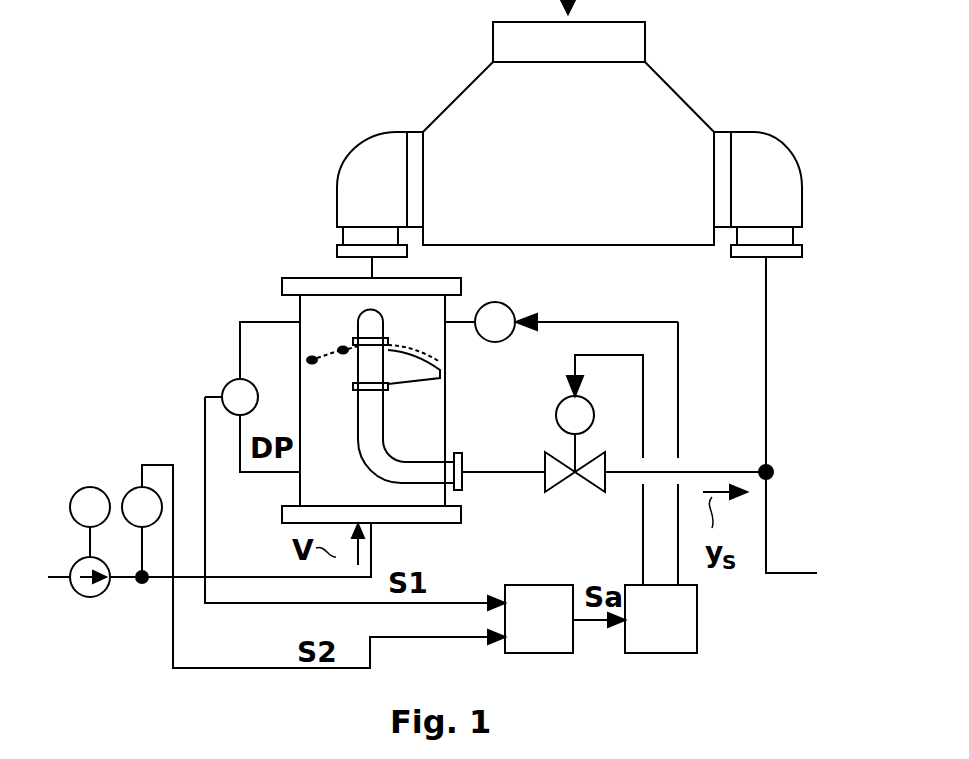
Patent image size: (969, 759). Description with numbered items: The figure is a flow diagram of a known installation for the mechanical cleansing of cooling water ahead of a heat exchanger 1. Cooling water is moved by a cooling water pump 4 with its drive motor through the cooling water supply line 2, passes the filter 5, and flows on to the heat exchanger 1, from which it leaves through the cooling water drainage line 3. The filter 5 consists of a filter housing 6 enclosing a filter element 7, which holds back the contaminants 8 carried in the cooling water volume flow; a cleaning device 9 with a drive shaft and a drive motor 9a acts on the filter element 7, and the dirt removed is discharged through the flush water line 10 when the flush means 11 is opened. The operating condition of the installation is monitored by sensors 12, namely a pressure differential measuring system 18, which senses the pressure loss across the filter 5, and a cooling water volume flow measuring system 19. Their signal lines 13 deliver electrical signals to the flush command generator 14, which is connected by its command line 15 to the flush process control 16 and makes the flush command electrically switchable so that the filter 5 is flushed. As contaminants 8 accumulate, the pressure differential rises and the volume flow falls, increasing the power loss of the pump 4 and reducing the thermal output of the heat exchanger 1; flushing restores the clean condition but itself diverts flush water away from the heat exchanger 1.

The heat exchanger 1 is at (577, 182).
The cooling water supply line 2 is at (275, 577).
The cooling water drainage line 3 is at (767, 541).
The cooling water pump 4 is at (92, 600).
The filter 5 is at (420, 499).
The filter housing 6 is at (298, 490).
The filter element 7 is at (326, 350).
The contaminants 8 is at (313, 364).
The cleaning device 9 is at (415, 368).
The drive motor 9a is at (503, 310).
The flush water line 10 is at (388, 462).
The flush means 11 is at (591, 482).
The sensors 12 is at (323, 532).
The signal lines 13 is at (203, 588).
The flush command generator 14 is at (556, 637).
The command line 15 is at (592, 624).
The flush process control 16 is at (678, 637).
The pressure differential measuring system 18 is at (232, 388).
The cooling water volume flow measuring system 19 is at (138, 492).